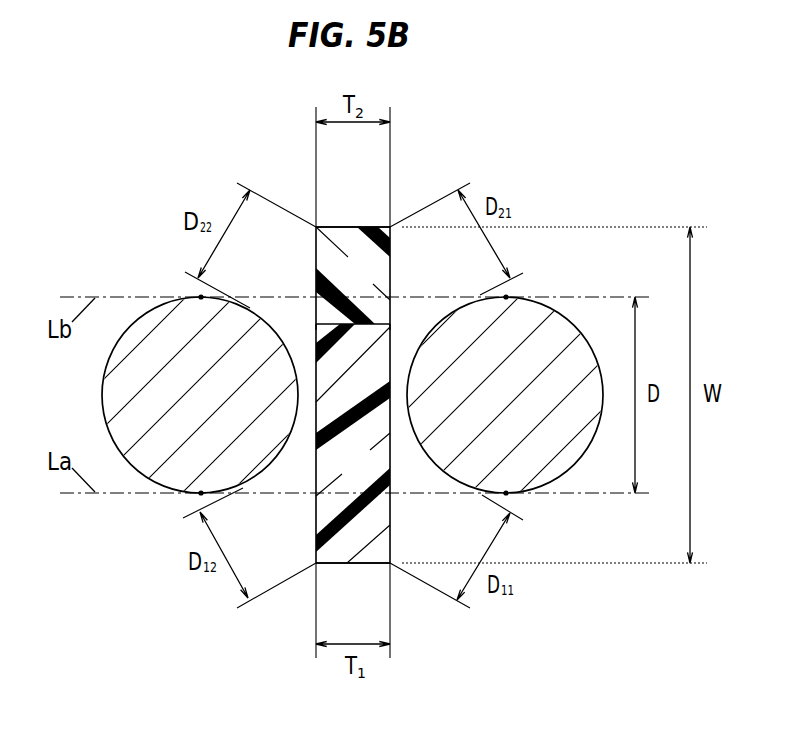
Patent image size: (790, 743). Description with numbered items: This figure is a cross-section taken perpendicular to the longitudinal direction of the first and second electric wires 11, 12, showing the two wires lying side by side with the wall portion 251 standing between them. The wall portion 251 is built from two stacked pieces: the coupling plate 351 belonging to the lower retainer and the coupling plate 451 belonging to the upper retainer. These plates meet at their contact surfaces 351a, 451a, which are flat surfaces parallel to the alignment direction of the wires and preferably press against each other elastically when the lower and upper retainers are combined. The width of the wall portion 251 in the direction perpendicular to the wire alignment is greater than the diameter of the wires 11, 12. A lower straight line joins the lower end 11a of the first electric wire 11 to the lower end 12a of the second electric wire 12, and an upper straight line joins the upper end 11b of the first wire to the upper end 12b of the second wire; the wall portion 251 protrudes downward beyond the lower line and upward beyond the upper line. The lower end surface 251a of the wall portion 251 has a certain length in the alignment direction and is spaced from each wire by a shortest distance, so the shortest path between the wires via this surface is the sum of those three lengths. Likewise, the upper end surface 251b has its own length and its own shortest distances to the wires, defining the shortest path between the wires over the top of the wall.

The first electric wire 11 is at (518, 410).
The second electric wire 12 is at (210, 410).
The lower end of the first electric wire 11a is at (506, 494).
The upper end of the first electric wire 11b is at (506, 296).
The lower end of the second electric wire 12a is at (201, 494).
The upper end of the second electric wire 12b is at (201, 296).
The wall portion 251 is at (411, 194).
The lower end surface 251a is at (353, 564).
The upper end surface 251b is at (347, 227).
The coupling plate 351 is at (372, 476).
The contact surface 351a is at (381, 323).
The coupling plate 451 is at (372, 282).
The contact surface 451a is at (321, 326).